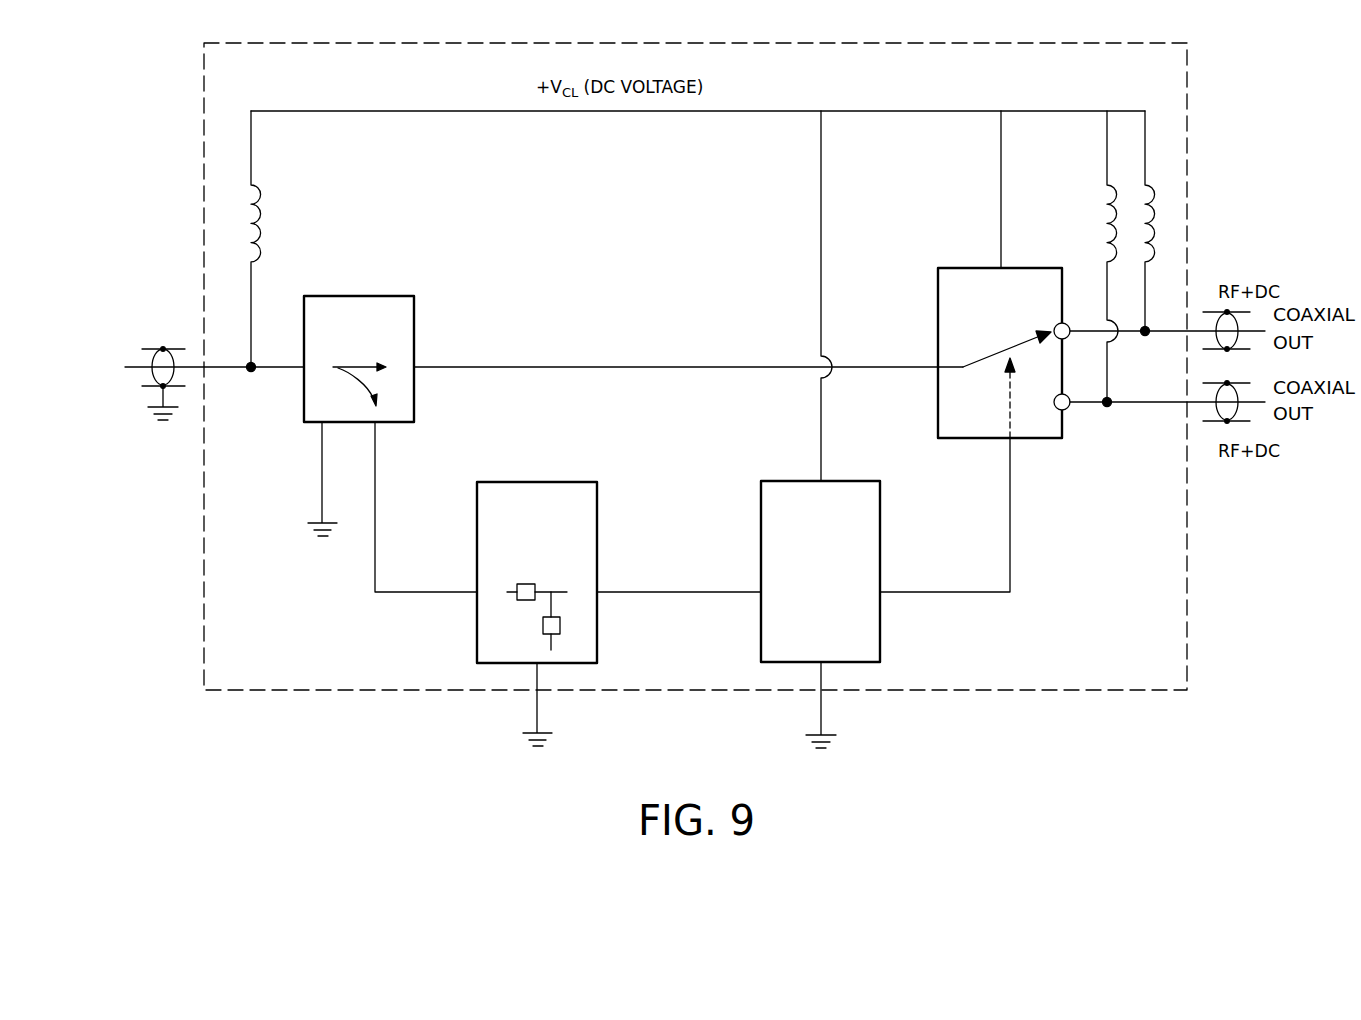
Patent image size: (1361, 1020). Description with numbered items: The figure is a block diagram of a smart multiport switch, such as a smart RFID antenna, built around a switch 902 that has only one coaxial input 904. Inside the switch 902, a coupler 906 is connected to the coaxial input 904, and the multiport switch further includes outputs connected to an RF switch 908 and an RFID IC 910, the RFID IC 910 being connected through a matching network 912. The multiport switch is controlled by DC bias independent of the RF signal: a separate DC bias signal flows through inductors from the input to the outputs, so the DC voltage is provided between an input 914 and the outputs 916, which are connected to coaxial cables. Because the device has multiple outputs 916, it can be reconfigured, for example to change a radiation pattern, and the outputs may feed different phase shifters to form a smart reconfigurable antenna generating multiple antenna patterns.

The switch 902 is at (203, 88).
The coaxial input 904 is at (143, 348).
The coupler 906 is at (375, 352).
The RF switch 908 is at (1016, 329).
The RFID IC 910 is at (836, 594).
The matching network 912 is at (551, 564).
The input 914 is at (251, 372).
The outputs 916 is at (1143, 336).